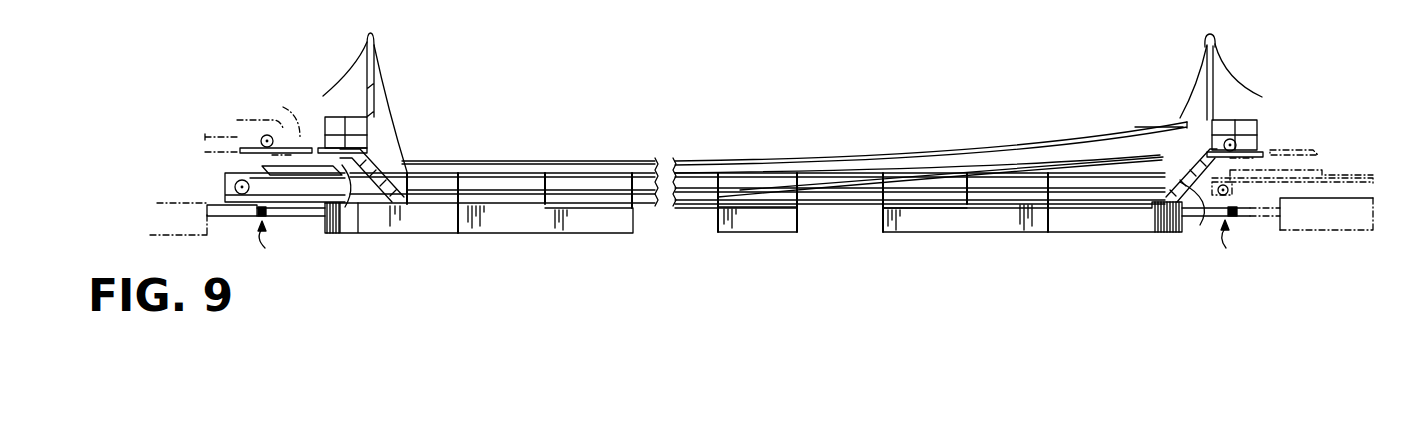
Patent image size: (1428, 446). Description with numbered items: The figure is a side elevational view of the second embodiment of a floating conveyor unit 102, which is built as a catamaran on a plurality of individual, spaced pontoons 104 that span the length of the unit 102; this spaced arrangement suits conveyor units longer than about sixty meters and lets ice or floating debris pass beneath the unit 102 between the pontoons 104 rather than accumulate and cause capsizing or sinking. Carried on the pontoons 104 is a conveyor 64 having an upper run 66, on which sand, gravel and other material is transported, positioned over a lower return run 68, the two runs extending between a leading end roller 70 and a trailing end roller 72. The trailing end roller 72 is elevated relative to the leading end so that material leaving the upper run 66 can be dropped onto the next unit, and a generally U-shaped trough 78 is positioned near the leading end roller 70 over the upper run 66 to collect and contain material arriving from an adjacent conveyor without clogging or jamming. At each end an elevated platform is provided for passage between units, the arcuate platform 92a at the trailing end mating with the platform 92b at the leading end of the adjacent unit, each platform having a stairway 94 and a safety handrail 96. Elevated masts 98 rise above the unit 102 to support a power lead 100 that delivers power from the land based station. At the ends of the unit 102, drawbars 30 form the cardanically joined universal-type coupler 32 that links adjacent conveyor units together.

The drawbar 30 is at (225, 218).
The coupler 32 is at (734, 251).
The conveyor 64 is at (1017, 147).
The upper run 66 is at (1078, 142).
The lower run 68 is at (1107, 160).
The leading end roller 70 is at (235, 183).
The trailing end roller 72 is at (263, 139).
The U-shaped trough 78 is at (345, 207).
The platform at the trailing end 92a is at (293, 118).
The platform at the leading end 92b is at (337, 84).
The stairway 94 is at (373, 167).
The safety handrail 96 is at (903, 165).
The mast 98 is at (378, 87).
The power lead 100 is at (397, 118).
The floating conveyor unit 102 is at (503, 258).
The pontoon 104 is at (596, 235).